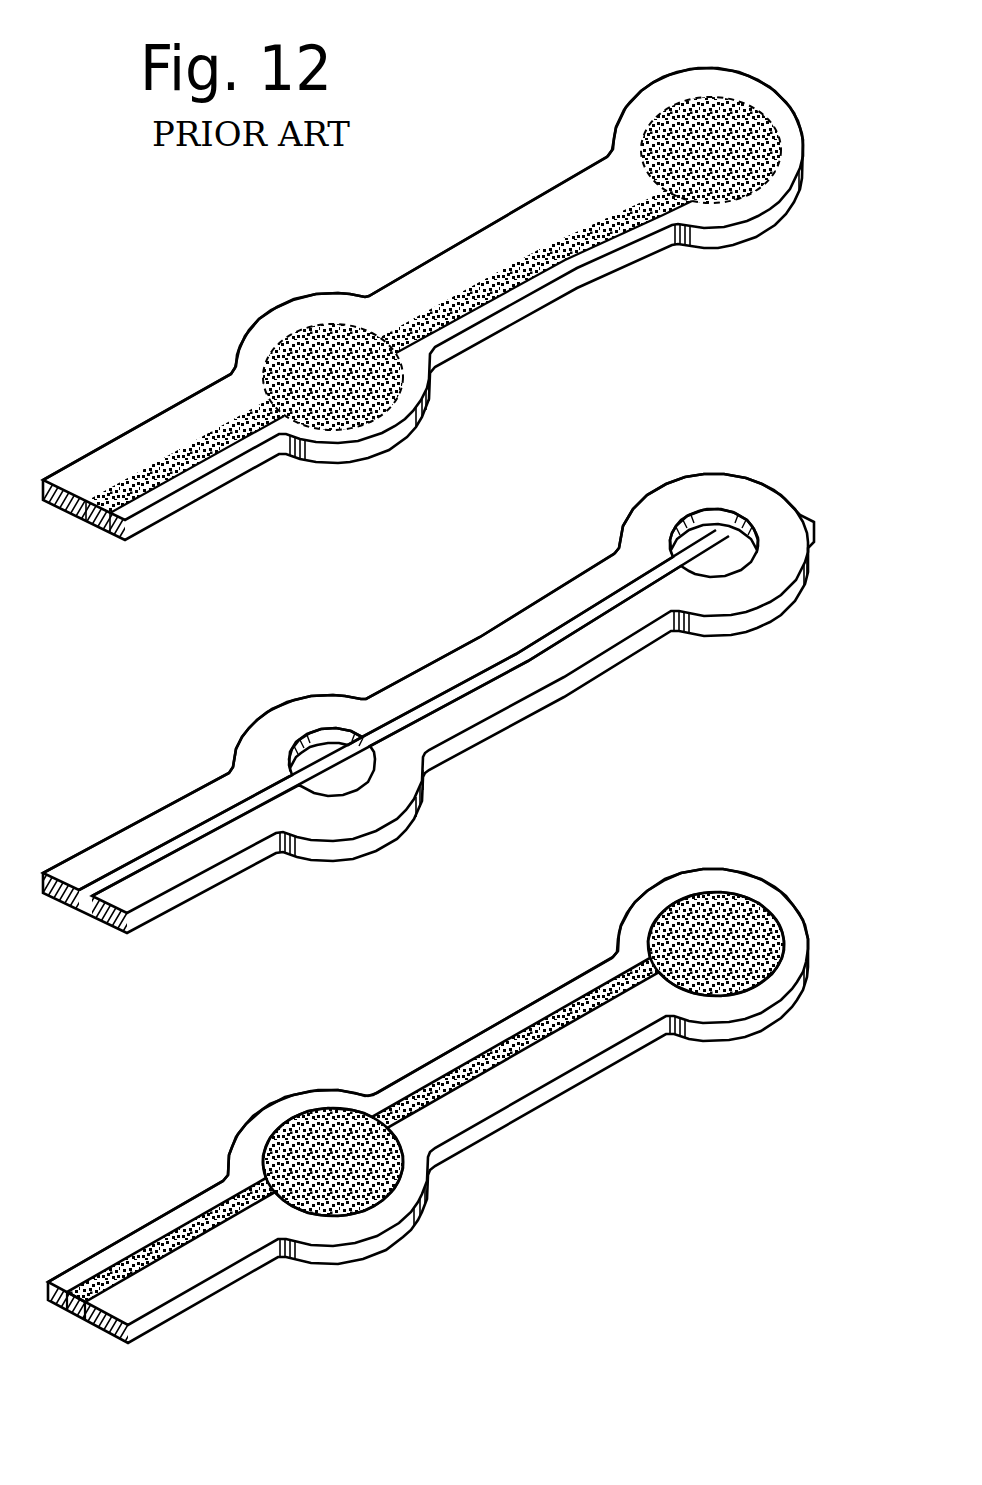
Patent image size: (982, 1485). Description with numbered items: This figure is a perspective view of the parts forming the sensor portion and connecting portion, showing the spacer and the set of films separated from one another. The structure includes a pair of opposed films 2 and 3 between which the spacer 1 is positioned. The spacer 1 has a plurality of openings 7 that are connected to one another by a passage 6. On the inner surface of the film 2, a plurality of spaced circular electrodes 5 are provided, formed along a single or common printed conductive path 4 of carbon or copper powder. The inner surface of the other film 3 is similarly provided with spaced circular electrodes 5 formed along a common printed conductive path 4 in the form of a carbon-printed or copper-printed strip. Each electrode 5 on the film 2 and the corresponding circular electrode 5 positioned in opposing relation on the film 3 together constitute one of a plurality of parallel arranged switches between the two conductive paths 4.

The spacer 1 is at (432, 615).
The film 2 is at (510, 200).
The film 3 is at (507, 1003).
The printed conductive path 4 is at (213, 483).
The circular electrode 5 is at (746, 112).
The passage 6 is at (518, 660).
The opening 7 is at (323, 733).